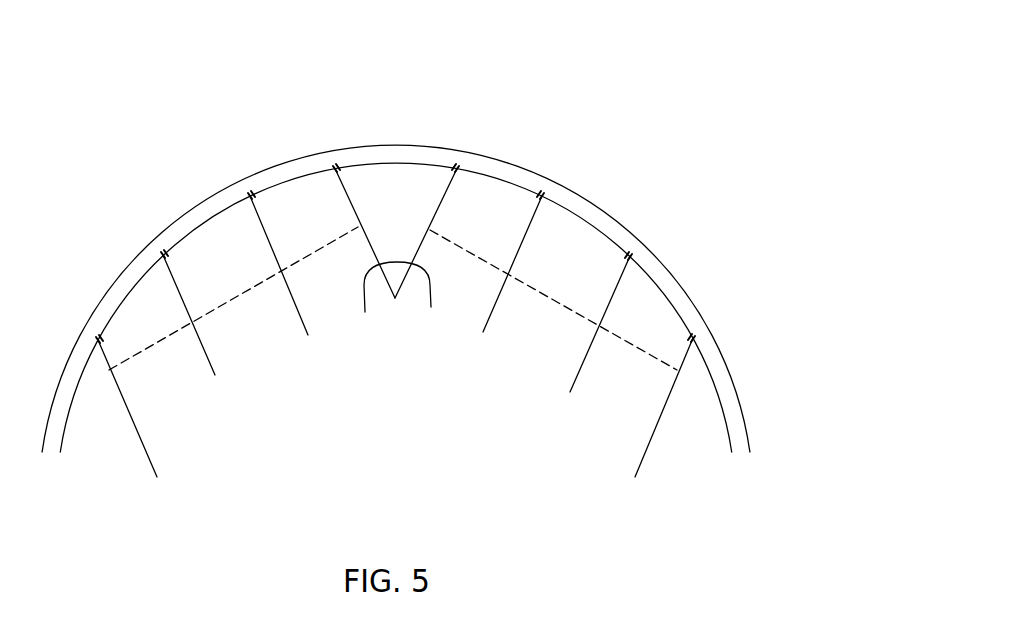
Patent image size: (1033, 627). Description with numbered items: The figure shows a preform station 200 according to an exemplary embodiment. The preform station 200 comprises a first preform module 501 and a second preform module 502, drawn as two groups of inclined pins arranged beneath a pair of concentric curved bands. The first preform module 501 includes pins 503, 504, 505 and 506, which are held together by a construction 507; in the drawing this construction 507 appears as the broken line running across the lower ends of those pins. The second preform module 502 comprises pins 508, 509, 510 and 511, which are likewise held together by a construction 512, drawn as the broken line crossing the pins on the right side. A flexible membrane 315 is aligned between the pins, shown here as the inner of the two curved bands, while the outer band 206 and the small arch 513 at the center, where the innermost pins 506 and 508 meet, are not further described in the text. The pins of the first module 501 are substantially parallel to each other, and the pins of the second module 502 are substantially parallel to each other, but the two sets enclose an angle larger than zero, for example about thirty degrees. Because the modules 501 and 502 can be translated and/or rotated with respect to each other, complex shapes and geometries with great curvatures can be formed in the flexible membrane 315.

The preform station 200 is at (663, 78).
The outer frame 206 is at (668, 268).
The flexible membrane 315 is at (716, 386).
The first preform module 501 is at (253, 435).
The second preform module 502 is at (493, 405).
The pin 503 is at (142, 442).
The pin 504 is at (207, 358).
The pin 505 is at (293, 303).
The pin 506 is at (365, 310).
The construction 507 is at (232, 297).
The pin 508 is at (431, 305).
The pin 509 is at (499, 303).
The pin 510 is at (585, 358).
The pin 511 is at (650, 433).
The construction 512 is at (540, 292).
The central connector 513 is at (397, 262).